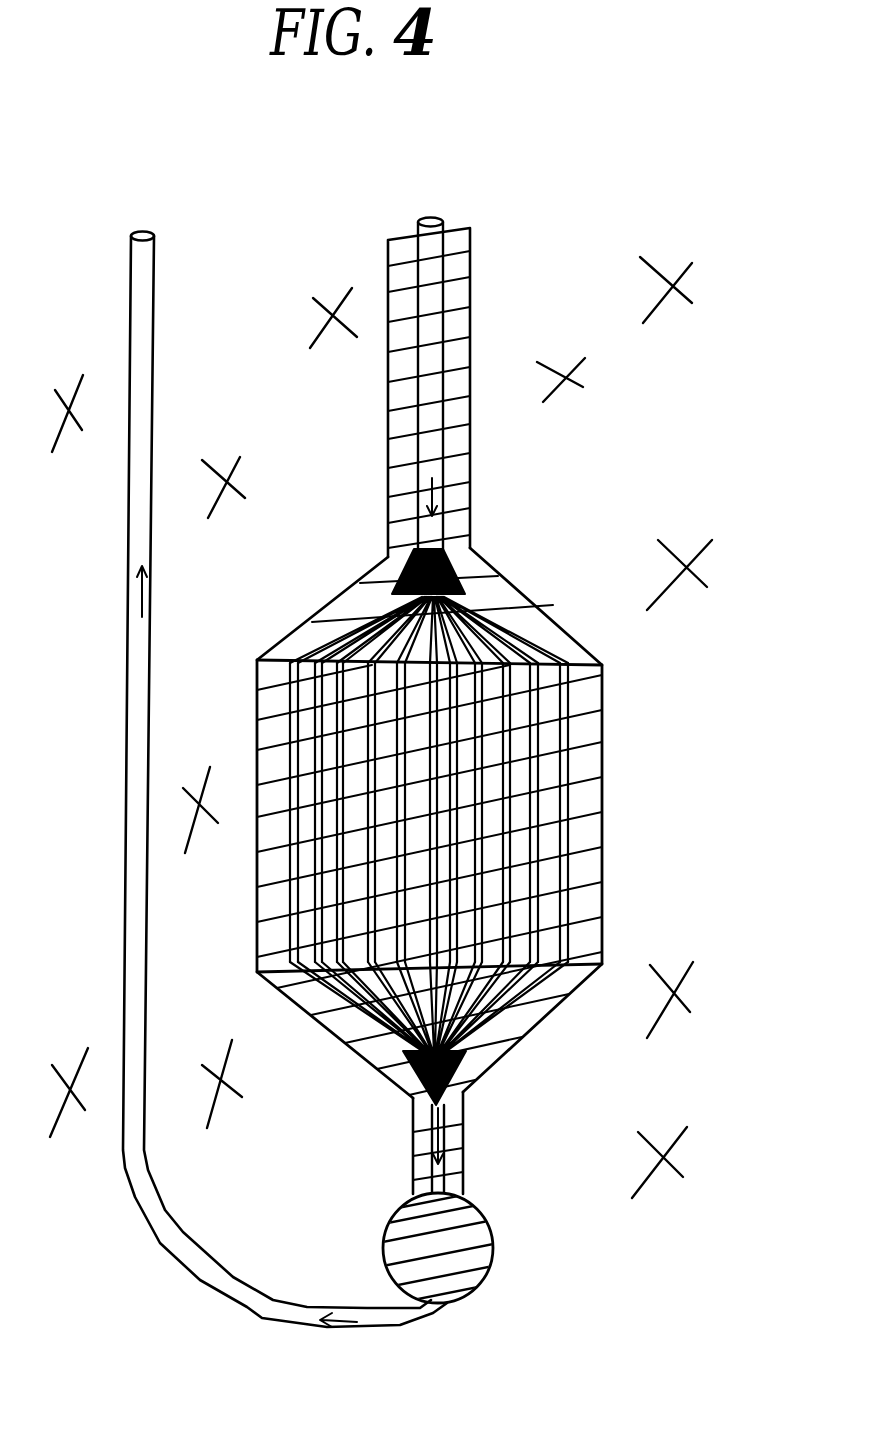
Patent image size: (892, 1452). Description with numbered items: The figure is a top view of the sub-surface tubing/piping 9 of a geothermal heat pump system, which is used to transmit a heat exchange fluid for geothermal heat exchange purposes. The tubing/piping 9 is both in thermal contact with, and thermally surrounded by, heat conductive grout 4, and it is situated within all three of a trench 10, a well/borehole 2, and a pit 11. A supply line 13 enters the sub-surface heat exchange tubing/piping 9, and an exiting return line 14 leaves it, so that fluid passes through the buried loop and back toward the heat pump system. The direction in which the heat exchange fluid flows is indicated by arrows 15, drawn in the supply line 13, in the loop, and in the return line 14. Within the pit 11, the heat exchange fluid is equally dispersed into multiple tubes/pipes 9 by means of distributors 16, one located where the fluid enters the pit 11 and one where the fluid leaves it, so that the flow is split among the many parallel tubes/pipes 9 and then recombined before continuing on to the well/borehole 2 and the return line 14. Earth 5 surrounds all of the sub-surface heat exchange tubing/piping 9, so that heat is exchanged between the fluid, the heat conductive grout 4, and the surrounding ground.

The well/borehole 2 is at (378, 1256).
The heat conductive grout 4 is at (462, 278).
The earth 5 is at (225, 1053).
The tubing/piping 9 is at (443, 323).
The trench 10 is at (390, 399).
The pit 11 is at (605, 890).
The supply line 13 is at (430, 443).
The return line 14 is at (133, 700).
The arrows 15 is at (457, 490).
The distributors 16 is at (388, 558).